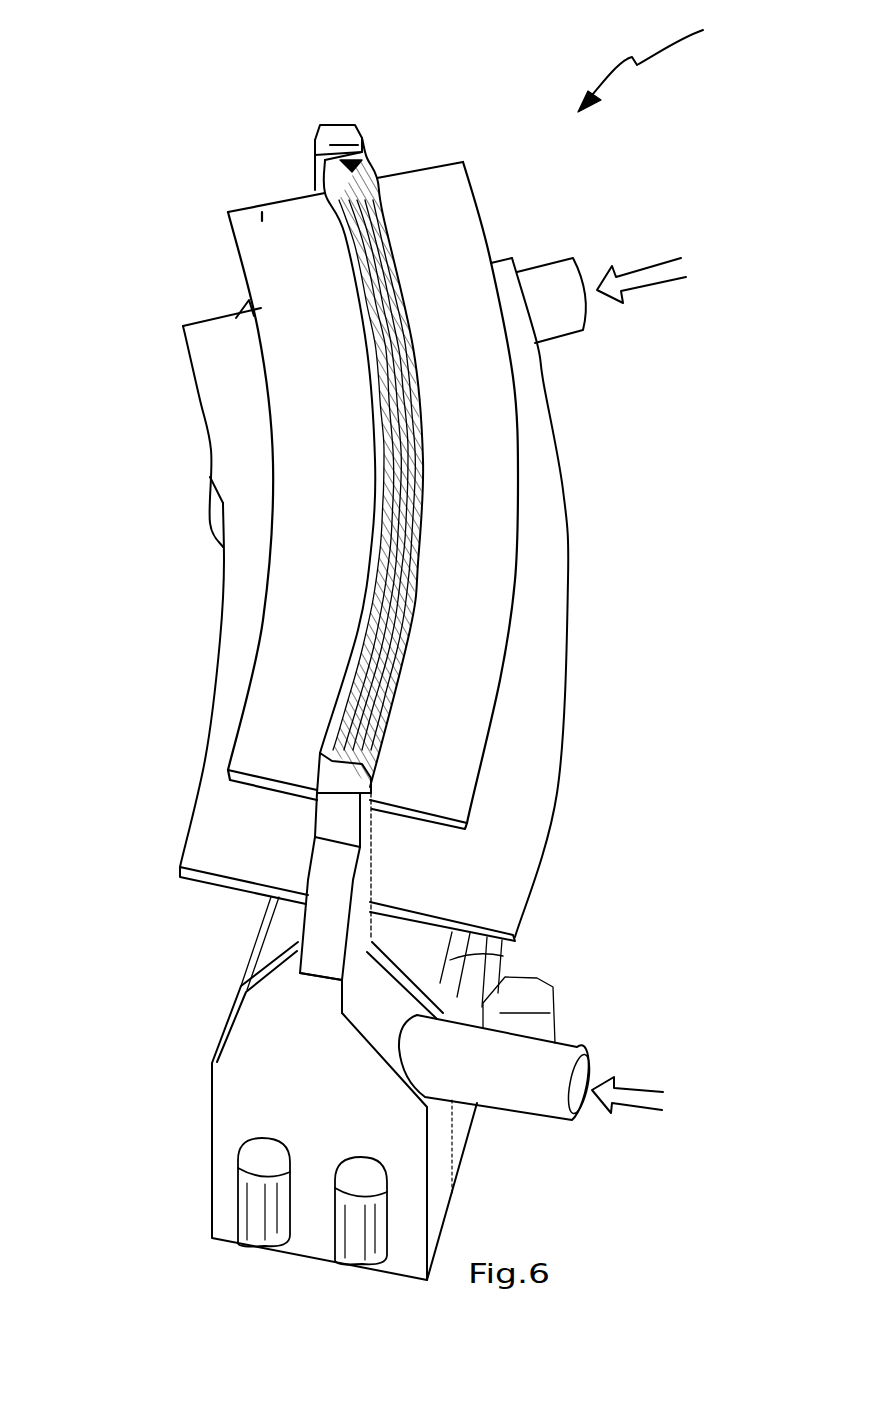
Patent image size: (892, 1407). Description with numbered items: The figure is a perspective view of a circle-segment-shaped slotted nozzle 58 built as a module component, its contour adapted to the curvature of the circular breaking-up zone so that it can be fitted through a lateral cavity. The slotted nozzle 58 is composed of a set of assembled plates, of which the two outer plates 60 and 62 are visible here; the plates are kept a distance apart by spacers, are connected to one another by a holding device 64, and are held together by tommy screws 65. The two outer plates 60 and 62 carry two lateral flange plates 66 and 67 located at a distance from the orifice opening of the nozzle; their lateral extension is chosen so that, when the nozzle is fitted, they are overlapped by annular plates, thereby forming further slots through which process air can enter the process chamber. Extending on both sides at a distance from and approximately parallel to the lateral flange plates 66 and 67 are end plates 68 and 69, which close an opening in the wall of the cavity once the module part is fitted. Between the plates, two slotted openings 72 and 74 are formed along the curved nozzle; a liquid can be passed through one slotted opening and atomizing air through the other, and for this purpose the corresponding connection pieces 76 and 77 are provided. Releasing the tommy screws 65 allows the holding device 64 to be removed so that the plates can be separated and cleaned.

The slotted nozzle 58 is at (656, 60).
The outer plate 60 is at (288, 932).
The outer plate 62 is at (500, 957).
The holding device 64 is at (223, 1088).
The tommy screws 65 is at (250, 1212).
The lateral flange plate 66 is at (228, 216).
The lateral flange plate 67 is at (457, 201).
The end plate 68 is at (234, 814).
The end plate 69 is at (537, 747).
The slotted opening 72 is at (367, 302).
The slotted opening 74 is at (403, 373).
The connection piece 76 is at (547, 278).
The connection piece 77 is at (528, 1097).